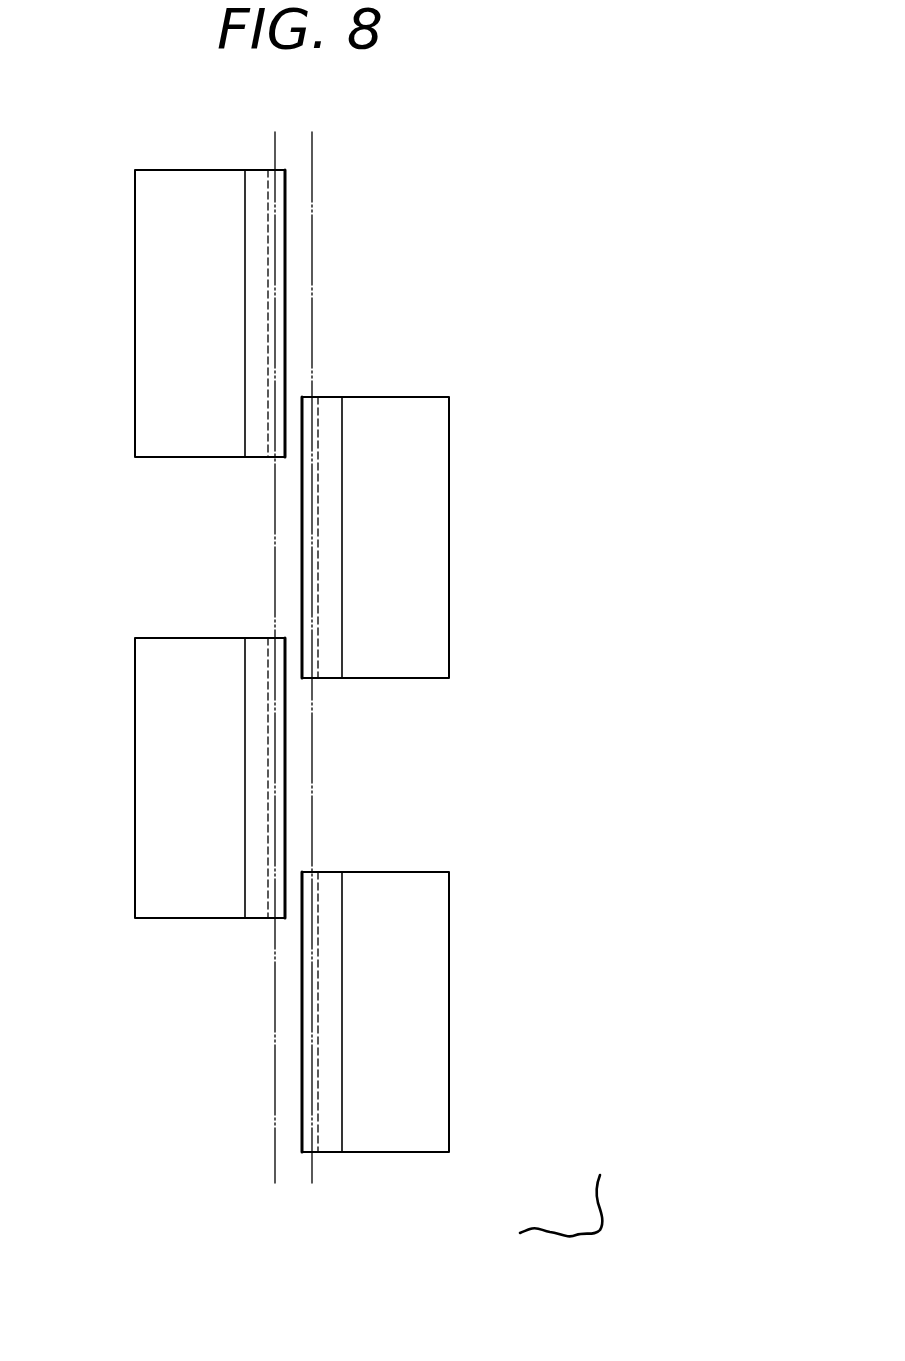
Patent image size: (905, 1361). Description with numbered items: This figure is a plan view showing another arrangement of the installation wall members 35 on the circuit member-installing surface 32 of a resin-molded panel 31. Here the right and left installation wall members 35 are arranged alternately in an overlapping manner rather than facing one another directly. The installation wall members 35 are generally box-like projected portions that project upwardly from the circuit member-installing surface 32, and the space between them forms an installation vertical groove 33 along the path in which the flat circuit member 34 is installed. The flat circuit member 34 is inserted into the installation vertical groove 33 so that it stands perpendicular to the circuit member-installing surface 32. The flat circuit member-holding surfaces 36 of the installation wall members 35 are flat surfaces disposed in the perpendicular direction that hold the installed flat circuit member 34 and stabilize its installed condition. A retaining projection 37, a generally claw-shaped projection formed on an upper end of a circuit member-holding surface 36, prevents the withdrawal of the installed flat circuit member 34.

The resin-molded panel 31 is at (552, 1235).
The circuit member-installing surface 32 is at (560, 1191).
The installation vertical groove 33 is at (287, 415).
The flat circuit member 34 is at (313, 286).
The installation wall member 35 is at (147, 333).
The circuit member-holding surface 36 is at (268, 330).
The retaining projection 37 is at (286, 220).